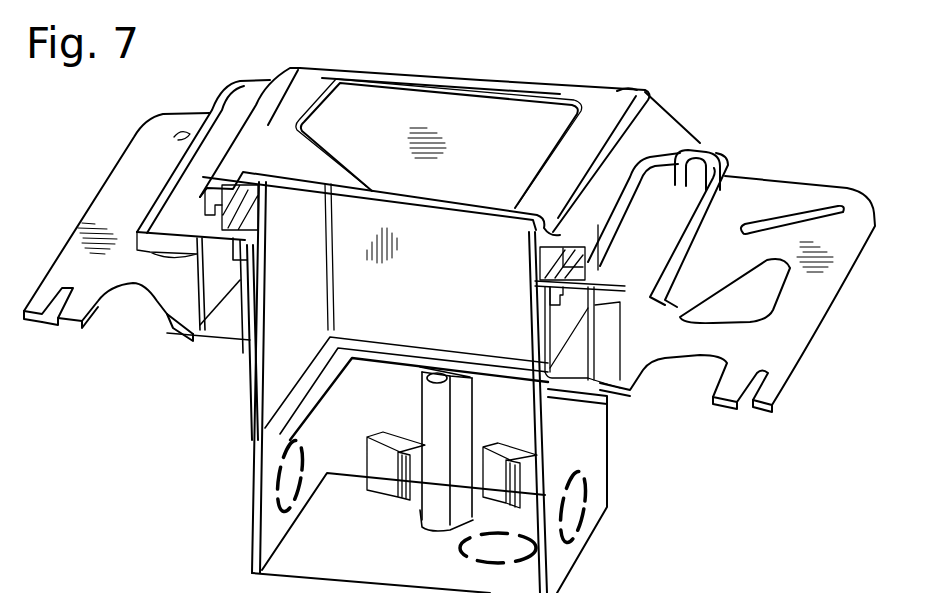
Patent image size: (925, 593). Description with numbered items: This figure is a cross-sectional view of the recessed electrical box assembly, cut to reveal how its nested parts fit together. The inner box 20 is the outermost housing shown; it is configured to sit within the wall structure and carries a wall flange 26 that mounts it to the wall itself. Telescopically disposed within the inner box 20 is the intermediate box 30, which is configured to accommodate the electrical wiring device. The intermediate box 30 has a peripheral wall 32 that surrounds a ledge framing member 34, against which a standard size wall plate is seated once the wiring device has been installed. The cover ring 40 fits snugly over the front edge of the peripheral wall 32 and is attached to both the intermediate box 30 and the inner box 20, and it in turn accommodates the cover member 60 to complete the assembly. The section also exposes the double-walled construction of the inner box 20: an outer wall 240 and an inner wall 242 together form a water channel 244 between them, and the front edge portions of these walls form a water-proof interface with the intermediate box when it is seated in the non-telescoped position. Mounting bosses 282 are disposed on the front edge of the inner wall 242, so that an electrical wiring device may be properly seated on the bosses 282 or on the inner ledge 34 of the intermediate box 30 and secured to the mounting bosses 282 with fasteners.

The inner box 20 is at (590, 447).
The wall flange 26 is at (783, 351).
The intermediate box 30 is at (750, 168).
The peripheral wall 32 is at (437, 288).
The ledge framing member 34 is at (318, 375).
The cover ring 40 is at (706, 147).
The cover member 60 is at (487, 122).
The outer wall 240 is at (197, 293).
The inner wall 242 is at (247, 325).
The water channel 244 is at (213, 300).
The mounting bosses 282 is at (437, 492).